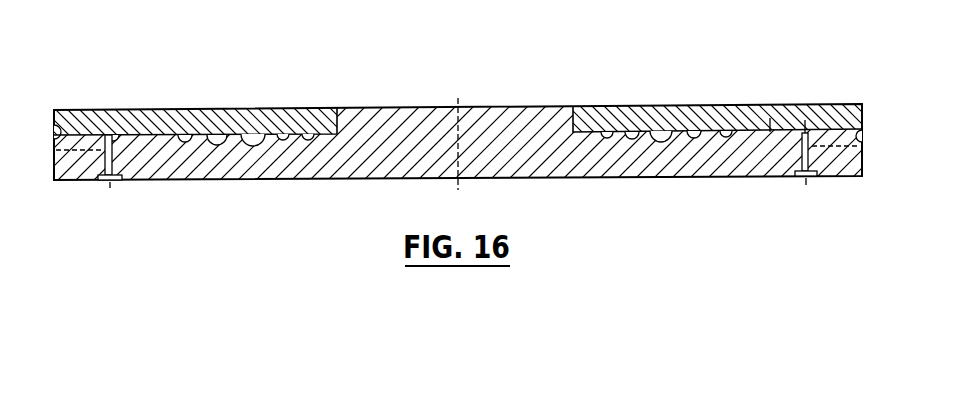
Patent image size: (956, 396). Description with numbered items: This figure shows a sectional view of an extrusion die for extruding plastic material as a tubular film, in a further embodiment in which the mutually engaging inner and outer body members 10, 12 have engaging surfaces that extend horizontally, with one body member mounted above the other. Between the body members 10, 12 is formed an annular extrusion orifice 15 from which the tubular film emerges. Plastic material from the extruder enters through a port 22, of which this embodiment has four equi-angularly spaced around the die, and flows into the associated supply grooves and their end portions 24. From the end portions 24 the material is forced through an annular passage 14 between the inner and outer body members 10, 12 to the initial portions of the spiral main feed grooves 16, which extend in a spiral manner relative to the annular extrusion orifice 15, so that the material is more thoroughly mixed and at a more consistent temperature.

The inner body member 10 is at (570, 178).
The outer body member 12 is at (125, 118).
The annular passage 14 is at (195, 118).
The annular extrusion orifice 15 is at (573, 128).
The main feed grooves 16 is at (685, 112).
The port 22 is at (838, 178).
The end portions 24 is at (778, 108).